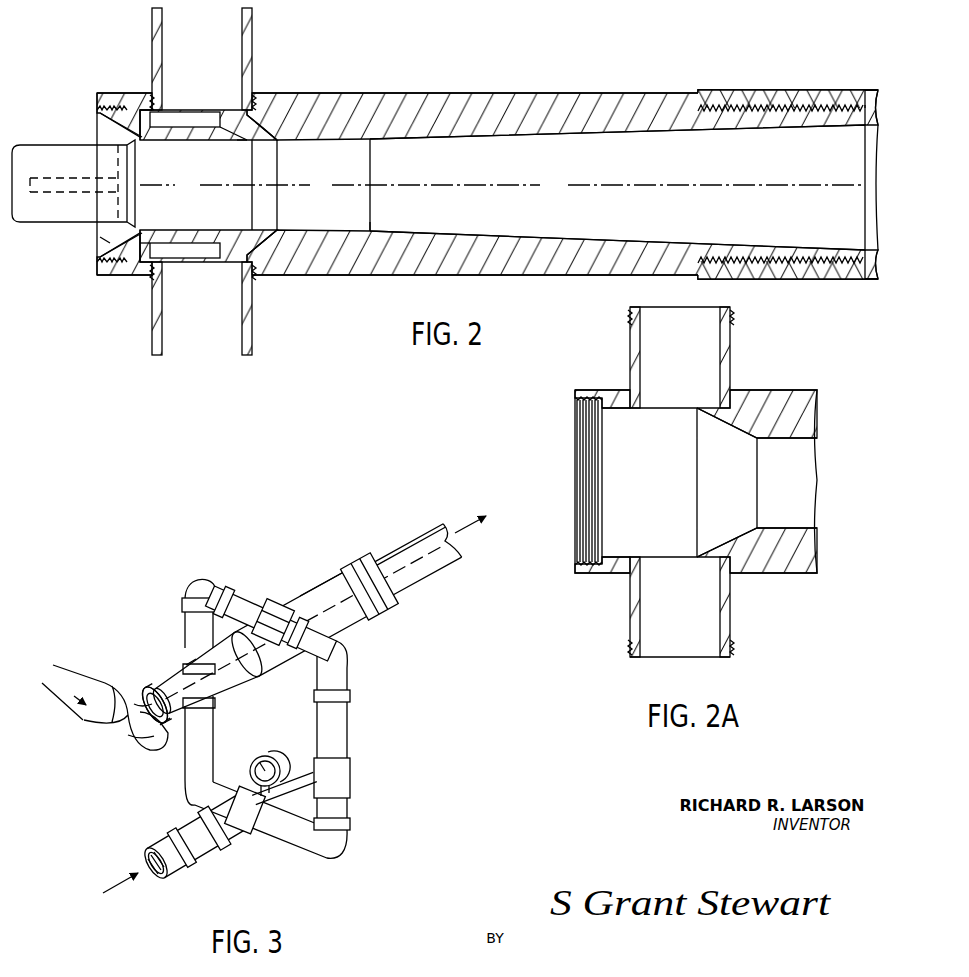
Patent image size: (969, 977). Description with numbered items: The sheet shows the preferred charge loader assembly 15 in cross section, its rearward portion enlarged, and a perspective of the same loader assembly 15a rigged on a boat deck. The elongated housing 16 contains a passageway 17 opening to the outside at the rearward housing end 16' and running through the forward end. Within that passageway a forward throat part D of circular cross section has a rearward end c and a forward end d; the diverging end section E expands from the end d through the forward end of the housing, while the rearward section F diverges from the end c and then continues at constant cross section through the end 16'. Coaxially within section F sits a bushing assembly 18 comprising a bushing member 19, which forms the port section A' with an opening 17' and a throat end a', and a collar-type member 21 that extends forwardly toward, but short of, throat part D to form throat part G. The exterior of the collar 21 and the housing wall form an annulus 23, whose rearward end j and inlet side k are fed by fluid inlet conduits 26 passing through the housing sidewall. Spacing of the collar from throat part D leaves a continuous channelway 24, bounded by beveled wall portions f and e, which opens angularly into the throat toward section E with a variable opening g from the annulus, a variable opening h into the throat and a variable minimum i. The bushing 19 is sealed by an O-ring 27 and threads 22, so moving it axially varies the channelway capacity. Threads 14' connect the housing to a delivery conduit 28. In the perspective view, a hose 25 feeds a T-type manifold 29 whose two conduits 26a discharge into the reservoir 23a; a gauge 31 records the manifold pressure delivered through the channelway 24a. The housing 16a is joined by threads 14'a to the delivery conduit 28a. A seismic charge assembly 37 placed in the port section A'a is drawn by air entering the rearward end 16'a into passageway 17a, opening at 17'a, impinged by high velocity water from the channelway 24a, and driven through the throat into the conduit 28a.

In FIG. 2, the threads 14' is at (780, 160).
In FIG. 3, the threads 14'a is at (377, 604).
In FIG. 2, the loader assembly 15 is at (613, 90).
In FIG. 2A, the loader assembly 15 is at (750, 388).
In FIG. 3, the loader assembly 15a is at (288, 593).
In FIG. 2, the elongated housing 16 is at (487, 169).
In FIG. 2A, the elongated housing 16 is at (696, 461).
In FIG. 2, the rearward housing end 16' is at (91, 122).
In FIG. 2A, the rearward housing end 16' is at (564, 476).
In FIG. 3, the housing 16a is at (317, 592).
In FIG. 3, the rearward housing end 16'a is at (141, 694).
In FIG. 2, the elongated passageway system 17 is at (558, 155).
In FIG. 2A, the elongated passageway system 17 is at (723, 484).
In FIG. 2, the opening 17' is at (97, 247).
In FIG. 3, the passageway 17a is at (338, 598).
In FIG. 3, the rearward opening 17'a is at (124, 678).
In FIG. 2, the bushing assembly 18 is at (143, 128).
In FIG. 2, the bushing member 19 is at (114, 113).
In FIG. 2, the collar-type member 21 is at (170, 128).
In FIG. 2, the threads 22 is at (100, 270).
In FIG. 2, the annulus 23 is at (195, 120).
In FIG. 3, the reservoir 23a is at (172, 677).
In FIG. 2, the channelway 24 is at (246, 245).
In FIG. 3, the channelway 24a is at (183, 666).
In FIG. 3, the conduit or hose 25 is at (202, 860).
In FIG. 2, the fluid inlet conduits 26 is at (152, 40).
In FIG. 2A, the fluid inlet conduits 26 is at (730, 636).
In FIG. 3, the conduit 26a is at (186, 618).
In FIG. 2, the O-ring 27 is at (140, 258).
In FIG. 2, the delivery conduit 28 is at (742, 92).
In FIG. 3, the delivery conduit 28a is at (408, 539).
In FIG. 3, the T-type manifold 29 is at (350, 770).
In FIG. 3, the gauge 31 is at (274, 758).
In FIG. 2, the seismic charge assembly 37 is at (40, 150).
In FIG. 3, the seismic charge assembly 37 is at (158, 740).
In FIG. 2, the port section A' is at (115, 160).
In FIG. 3, the port section A'a is at (173, 743).
In FIG. 2, the throat part D is at (369, 185).
In FIG. 2, the diverging end section E is at (864, 185).
In FIG. 2, the rearward section F is at (226, 124).
In FIG. 2A, the rearward section F is at (651, 503).
In FIG. 2, the throat part G is at (276, 185).
In FIG. 2A, the throat part G is at (780, 503).
In FIG. 2, the throat end of port a' is at (93, 231).
In FIG. 2, the rearward end of throat part D c is at (250, 238).
In FIG. 2, the forward end of throat part D d is at (371, 231).
In FIG. 2, the housing wall portion e is at (249, 142).
In FIG. 2, the collar wall portion f is at (242, 140).
In FIG. 2, the variable opening from annulus g is at (205, 258).
In FIG. 2, the variable opening into throat h is at (293, 161).
In FIG. 2, the variable minimum i is at (238, 141).
In FIG. 2, the rearward end of annulus j is at (155, 250).
In FIG. 2, the inlet side of annulus k is at (158, 110).